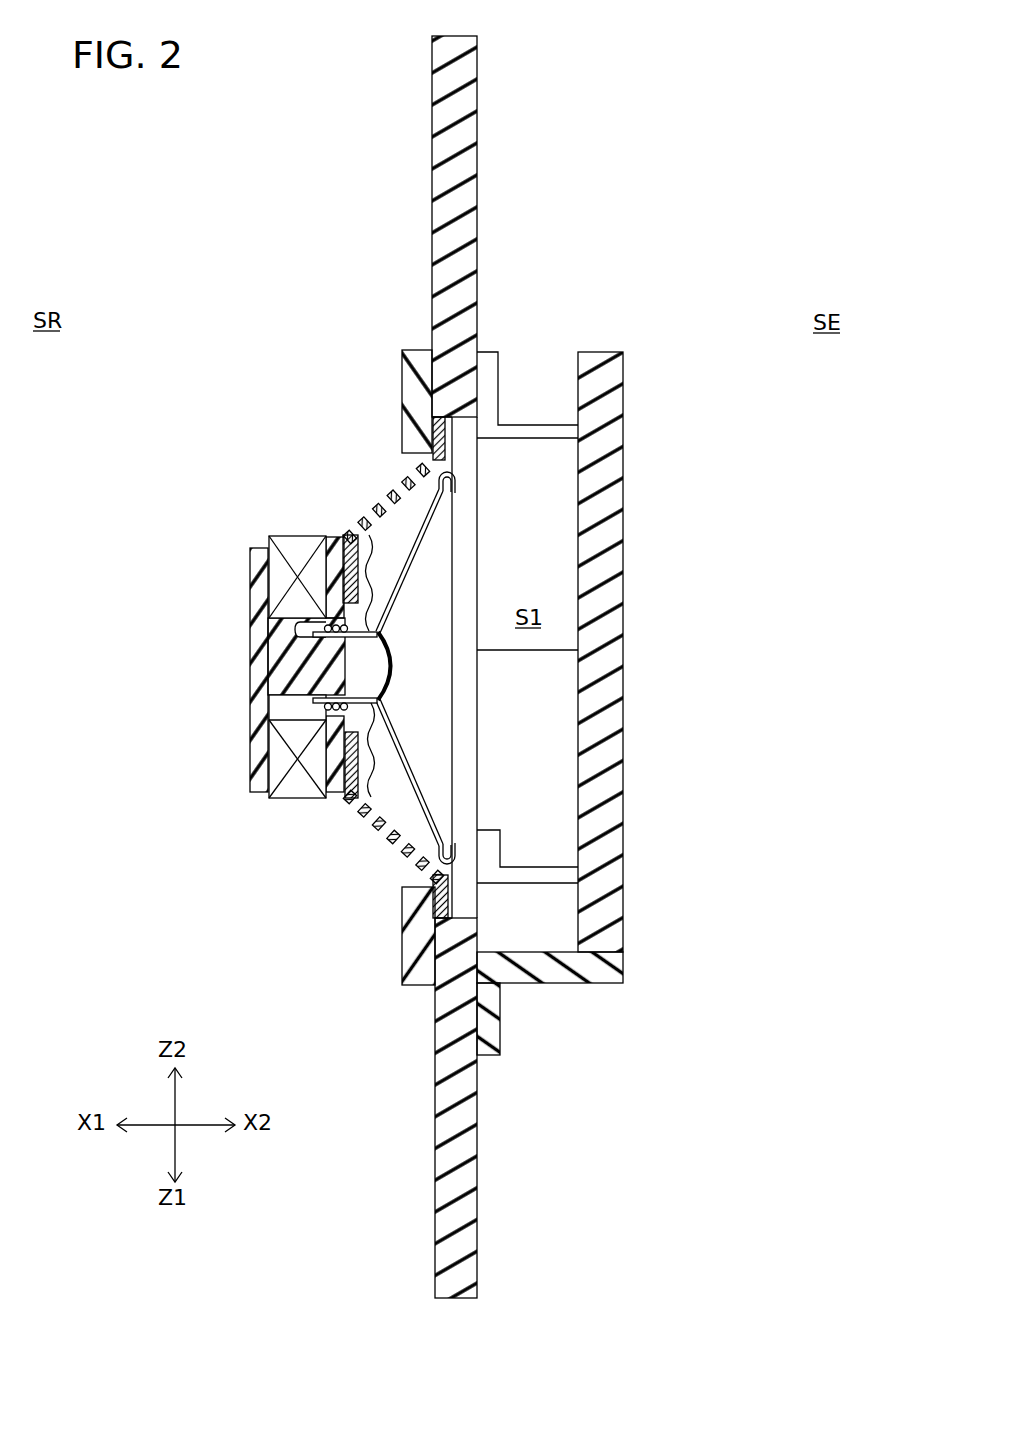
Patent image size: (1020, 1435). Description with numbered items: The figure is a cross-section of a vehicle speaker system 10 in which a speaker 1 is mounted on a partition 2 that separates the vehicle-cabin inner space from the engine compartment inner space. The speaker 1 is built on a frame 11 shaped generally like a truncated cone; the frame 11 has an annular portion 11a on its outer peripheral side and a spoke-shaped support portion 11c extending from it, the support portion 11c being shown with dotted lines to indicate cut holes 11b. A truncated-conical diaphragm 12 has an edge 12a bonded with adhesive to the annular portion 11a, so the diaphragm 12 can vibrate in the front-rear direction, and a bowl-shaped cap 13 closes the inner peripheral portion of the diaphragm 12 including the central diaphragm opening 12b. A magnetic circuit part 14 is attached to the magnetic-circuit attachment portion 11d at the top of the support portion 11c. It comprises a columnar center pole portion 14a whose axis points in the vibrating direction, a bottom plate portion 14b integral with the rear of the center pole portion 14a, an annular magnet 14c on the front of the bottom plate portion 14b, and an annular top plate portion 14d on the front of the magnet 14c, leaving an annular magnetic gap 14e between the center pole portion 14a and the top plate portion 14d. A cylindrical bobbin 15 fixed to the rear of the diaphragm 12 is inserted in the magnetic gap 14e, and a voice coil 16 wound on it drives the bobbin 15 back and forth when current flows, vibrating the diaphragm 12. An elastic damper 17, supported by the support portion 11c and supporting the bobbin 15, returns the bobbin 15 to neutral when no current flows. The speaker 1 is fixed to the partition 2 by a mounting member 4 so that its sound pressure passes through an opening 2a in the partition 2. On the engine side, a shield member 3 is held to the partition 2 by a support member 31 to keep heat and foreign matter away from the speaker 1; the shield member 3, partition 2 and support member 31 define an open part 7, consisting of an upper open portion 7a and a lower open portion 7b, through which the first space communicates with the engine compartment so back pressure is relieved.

The speaker 1 is at (240, 470).
The partition 2 is at (455, 222).
The opening 2a is at (467, 578).
The shield member 3 is at (600, 375).
The support member 31 is at (538, 968).
The mounting member 4 is at (410, 388).
The open part 7 is at (619, 570).
The upper open portion 7a is at (535, 395).
The lower open portion 7b is at (537, 840).
The vehicle speaker system 10 is at (207, 228).
The frame 11 is at (345, 545).
The annular portion 11a is at (446, 445).
The cut holes 11b is at (352, 523).
The support portion 11c is at (362, 837).
The magnetic-circuit attachment portion 11d is at (350, 796).
The diaphragm 12 is at (415, 520).
The edge 12a is at (455, 480).
The diaphragm opening 12b is at (377, 684).
The cap 13 is at (388, 655).
The magnetic circuit part 14 is at (231, 680).
The center pole portion 14a is at (308, 670).
The bottom plate portion 14b is at (262, 715).
The magnet 14c is at (285, 583).
The top plate portion 14d is at (318, 790).
The magnetic gap 14e is at (297, 633).
The bobbin 15 is at (326, 712).
The voice coil 16 is at (345, 704).
The damper 17 is at (385, 800).